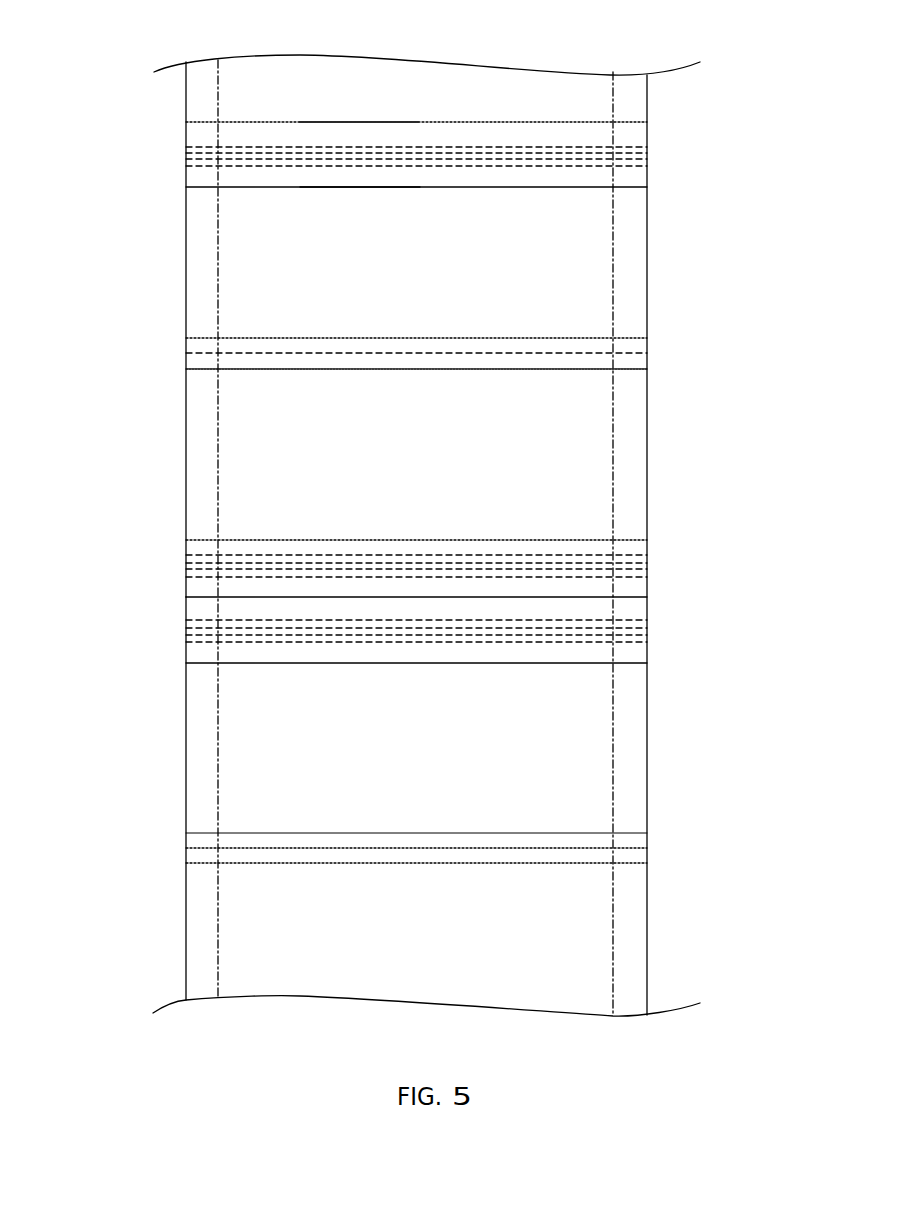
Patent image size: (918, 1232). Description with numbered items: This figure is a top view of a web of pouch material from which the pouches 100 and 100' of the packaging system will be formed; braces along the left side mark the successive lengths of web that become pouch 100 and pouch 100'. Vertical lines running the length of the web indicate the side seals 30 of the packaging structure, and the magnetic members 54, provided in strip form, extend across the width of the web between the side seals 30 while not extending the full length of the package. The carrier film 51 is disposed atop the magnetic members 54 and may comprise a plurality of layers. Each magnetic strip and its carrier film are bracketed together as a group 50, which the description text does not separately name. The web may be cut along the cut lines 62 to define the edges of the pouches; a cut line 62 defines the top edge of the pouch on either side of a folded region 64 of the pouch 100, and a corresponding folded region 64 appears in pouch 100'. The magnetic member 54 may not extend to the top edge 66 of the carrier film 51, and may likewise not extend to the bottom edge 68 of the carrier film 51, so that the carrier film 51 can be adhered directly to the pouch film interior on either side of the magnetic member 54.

The side seal 30 is at (632, 310).
The adhesive strip 50 is at (747, 122).
The carrier film 51 is at (590, 173).
The magnetic member 54 is at (580, 146).
The cut line 62 is at (493, 121).
The folded region 64 is at (502, 369).
The top edge 66 is at (331, 123).
The bottom edge 68 is at (331, 189).
The pouch 100 is at (132, 329).
The pouch 100' is at (140, 798).